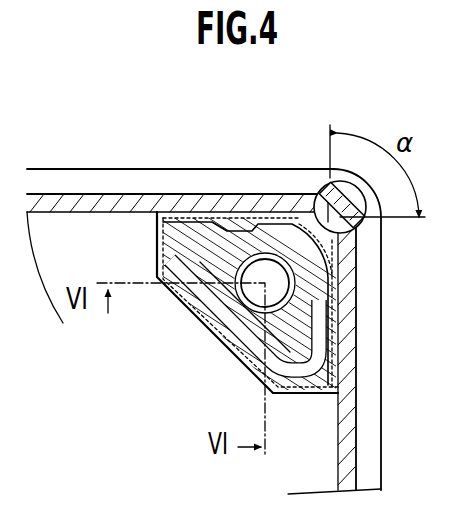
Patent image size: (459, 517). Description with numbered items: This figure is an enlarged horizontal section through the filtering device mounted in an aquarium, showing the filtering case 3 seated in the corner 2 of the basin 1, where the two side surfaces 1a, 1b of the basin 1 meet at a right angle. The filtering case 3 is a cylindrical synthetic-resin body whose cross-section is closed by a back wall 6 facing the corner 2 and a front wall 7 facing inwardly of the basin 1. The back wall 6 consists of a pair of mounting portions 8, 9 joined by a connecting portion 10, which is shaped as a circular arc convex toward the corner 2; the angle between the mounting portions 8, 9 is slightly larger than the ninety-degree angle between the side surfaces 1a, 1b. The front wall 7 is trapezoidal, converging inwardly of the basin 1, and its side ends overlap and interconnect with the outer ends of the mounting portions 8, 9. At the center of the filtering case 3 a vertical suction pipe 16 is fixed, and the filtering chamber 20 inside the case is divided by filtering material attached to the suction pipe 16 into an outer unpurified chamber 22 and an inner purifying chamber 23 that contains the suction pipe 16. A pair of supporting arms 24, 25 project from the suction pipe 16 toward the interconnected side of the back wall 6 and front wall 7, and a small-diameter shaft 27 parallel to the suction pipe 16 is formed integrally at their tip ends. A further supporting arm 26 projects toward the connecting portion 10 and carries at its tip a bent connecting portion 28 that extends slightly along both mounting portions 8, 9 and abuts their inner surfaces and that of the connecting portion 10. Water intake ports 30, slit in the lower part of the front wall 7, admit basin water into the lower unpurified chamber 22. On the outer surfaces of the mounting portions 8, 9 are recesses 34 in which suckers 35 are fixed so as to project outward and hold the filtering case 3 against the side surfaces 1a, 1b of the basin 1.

The basin 1 is at (103, 167).
The side surface 1a is at (107, 213).
The side surface 1b is at (348, 414).
The corner 2 is at (327, 182).
The filtering case 3 is at (297, 403).
The back wall 6 is at (342, 357).
The front wall 7 is at (311, 394).
The mounting portion 8 is at (283, 225).
The mounting portion 9 is at (340, 270).
The connecting portion 10 is at (362, 238).
The suction pipe 16 is at (242, 322).
The filtering chamber 20 is at (278, 338).
The unpurified chamber 22 is at (176, 290).
The purifying chamber 23 is at (213, 276).
The supporting arm 24 is at (203, 318).
The supporting arm 25 is at (341, 340).
The supporting arm 26 is at (246, 216).
The small-diameter shaft 27 is at (172, 193).
The connecting portion 28 is at (323, 198).
The water intake port 30 is at (248, 335).
The recess 34 is at (212, 205).
The sucker 35 is at (224, 228).